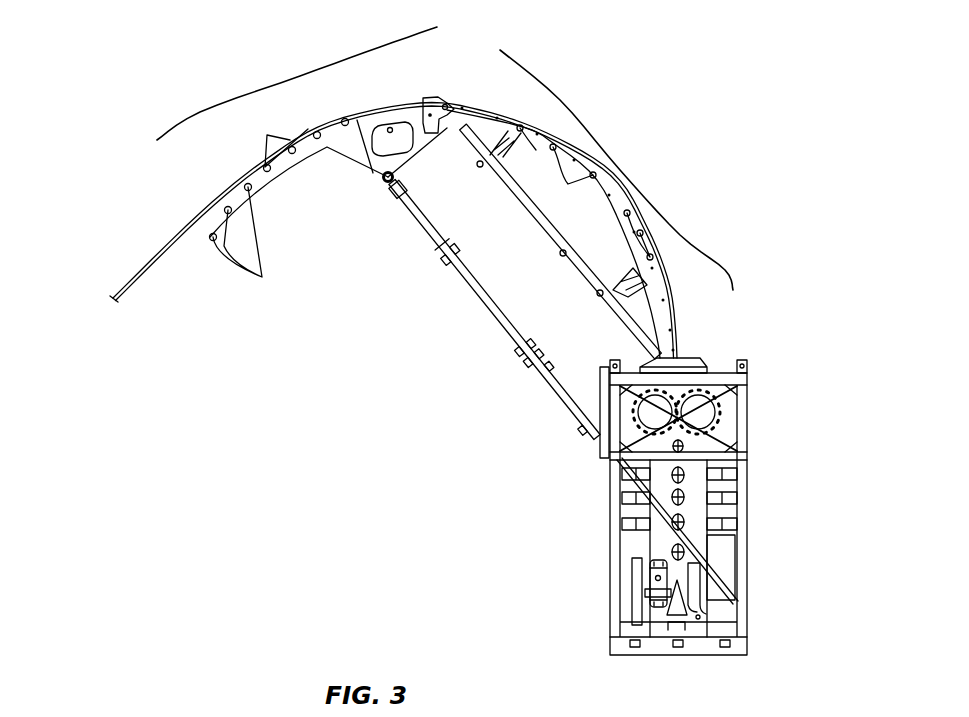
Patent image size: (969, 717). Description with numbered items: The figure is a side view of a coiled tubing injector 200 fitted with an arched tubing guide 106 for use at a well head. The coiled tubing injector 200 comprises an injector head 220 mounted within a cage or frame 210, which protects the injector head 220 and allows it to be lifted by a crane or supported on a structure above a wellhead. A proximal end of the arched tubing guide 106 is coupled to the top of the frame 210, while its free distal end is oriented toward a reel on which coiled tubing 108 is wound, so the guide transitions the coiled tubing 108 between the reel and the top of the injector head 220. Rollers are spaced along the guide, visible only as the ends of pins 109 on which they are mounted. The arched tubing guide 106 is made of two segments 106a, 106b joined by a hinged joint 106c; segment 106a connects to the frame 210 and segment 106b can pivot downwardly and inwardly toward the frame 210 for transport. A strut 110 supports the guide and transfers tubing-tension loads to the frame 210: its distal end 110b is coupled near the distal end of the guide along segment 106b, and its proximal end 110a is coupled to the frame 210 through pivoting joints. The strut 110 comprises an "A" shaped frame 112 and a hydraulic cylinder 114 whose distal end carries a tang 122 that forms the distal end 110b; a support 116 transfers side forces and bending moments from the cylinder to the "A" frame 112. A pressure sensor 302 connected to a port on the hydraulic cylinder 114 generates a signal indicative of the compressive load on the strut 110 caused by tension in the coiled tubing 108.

The arched tubing guide 106 is at (688, 45).
The segment 106a is at (622, 160).
The segment 106b is at (300, 77).
The hinged joint 106c is at (457, 93).
The coiled tubing 108 is at (173, 243).
The pins 109 is at (268, 132).
The strut 110 is at (454, 297).
The proximal end of the strut 110a is at (592, 449).
The distal end of the strut 110b is at (400, 215).
The "A" shaped frame 112 is at (557, 387).
The hydraulic cylinder 114 is at (426, 213).
The support 116 is at (440, 266).
The tang 122 is at (386, 185).
The coiled tubing injector 200 is at (368, 384).
The frame 210 is at (607, 487).
The injector head 220 is at (657, 550).
The pressure sensor 302 is at (530, 342).